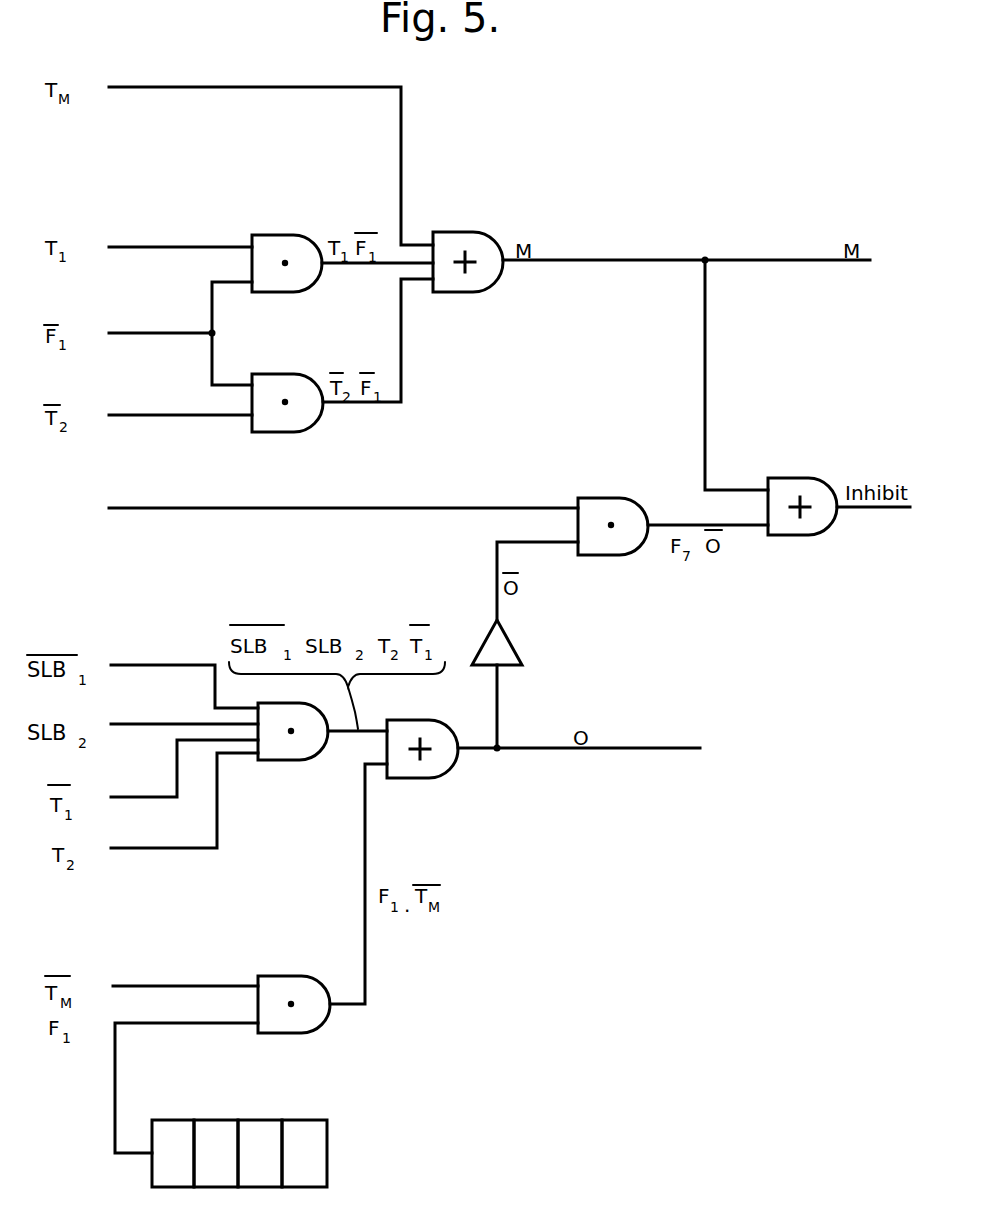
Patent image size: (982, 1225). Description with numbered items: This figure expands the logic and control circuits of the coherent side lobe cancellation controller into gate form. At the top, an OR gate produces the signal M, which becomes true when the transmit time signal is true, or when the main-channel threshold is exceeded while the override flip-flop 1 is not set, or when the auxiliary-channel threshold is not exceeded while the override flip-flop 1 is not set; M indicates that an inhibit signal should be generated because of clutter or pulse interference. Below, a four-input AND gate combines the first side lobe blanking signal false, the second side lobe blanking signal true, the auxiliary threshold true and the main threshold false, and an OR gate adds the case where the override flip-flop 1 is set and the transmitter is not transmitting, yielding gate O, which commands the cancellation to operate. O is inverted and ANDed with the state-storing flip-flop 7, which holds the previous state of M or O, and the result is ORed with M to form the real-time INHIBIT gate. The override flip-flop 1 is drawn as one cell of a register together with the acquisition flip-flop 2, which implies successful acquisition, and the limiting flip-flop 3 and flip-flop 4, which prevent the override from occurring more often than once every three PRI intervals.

The INHIBIT override flip-flop F1 1 is at (173, 1153).
The flip-flop F2 2 is at (216, 1153).
The flip-flop F3 3 is at (260, 1153).
The flip-flop F4 4 is at (304, 1153).
The flip-flop F7 7 is at (310, 514).